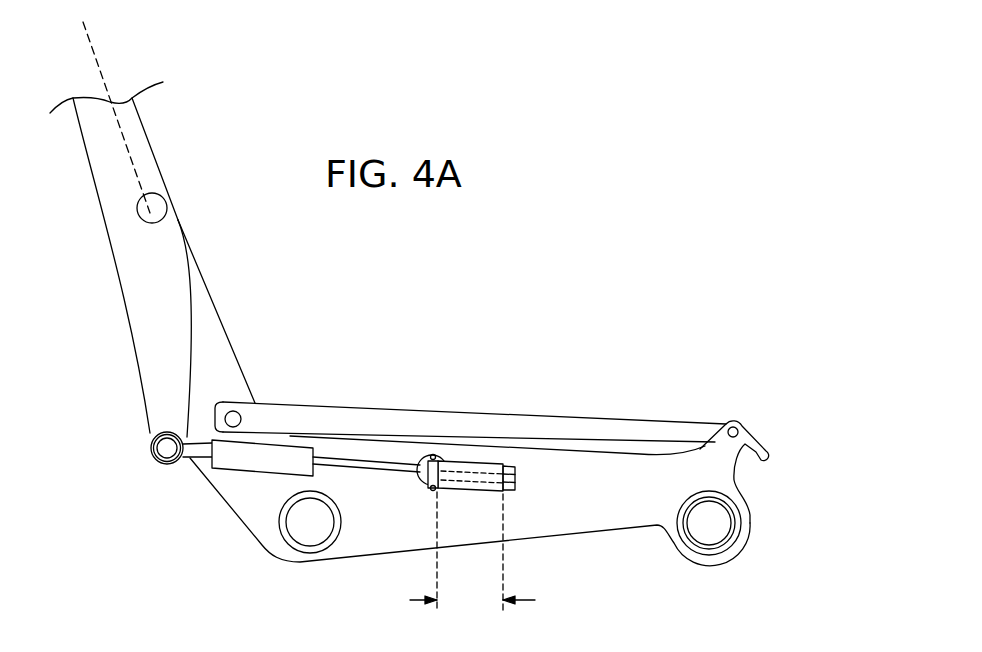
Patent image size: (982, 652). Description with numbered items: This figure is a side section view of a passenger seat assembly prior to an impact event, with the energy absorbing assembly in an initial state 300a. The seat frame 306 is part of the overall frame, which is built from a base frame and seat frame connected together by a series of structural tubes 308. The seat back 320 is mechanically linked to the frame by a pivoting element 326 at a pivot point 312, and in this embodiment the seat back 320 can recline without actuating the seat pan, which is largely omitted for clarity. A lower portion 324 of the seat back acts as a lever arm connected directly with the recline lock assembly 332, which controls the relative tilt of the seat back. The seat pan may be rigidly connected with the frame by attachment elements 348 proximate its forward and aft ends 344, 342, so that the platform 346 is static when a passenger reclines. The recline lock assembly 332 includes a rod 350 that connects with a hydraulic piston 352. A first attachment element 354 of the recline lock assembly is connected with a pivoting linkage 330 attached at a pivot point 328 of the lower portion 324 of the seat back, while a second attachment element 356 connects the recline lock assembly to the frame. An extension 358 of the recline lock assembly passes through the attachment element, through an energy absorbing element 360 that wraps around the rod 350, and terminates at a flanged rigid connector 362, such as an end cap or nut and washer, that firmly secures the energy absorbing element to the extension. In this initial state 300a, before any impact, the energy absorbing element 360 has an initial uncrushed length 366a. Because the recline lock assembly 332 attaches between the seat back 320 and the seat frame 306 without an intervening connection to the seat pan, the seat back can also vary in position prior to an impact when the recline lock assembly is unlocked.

The initial state 300a is at (490, 308).
The seat frame 306 is at (712, 440).
The structural tubes 308 is at (733, 513).
The pivot point 312 is at (138, 210).
The seat back 320 is at (158, 133).
The lower portion 324 is at (137, 328).
The pivoting element 326 is at (158, 203).
The pivot point 328 is at (150, 460).
The pivoting linkage 330 is at (183, 457).
The recline lock assembly 332 is at (352, 452).
The aft end 342 is at (227, 402).
The forward end 344 is at (762, 438).
The platform 346 is at (580, 407).
The attachment elements 348 is at (240, 418).
The rod 350 is at (395, 470).
The hydraulic piston 352 is at (240, 465).
The first attachment element 354 is at (152, 443).
The second attachment element 356 is at (420, 487).
The extension 358 is at (447, 470).
The energy absorbing element 360 is at (472, 462).
The rigid connector 362 is at (513, 472).
The initial uncrushed length 366a is at (472, 554).